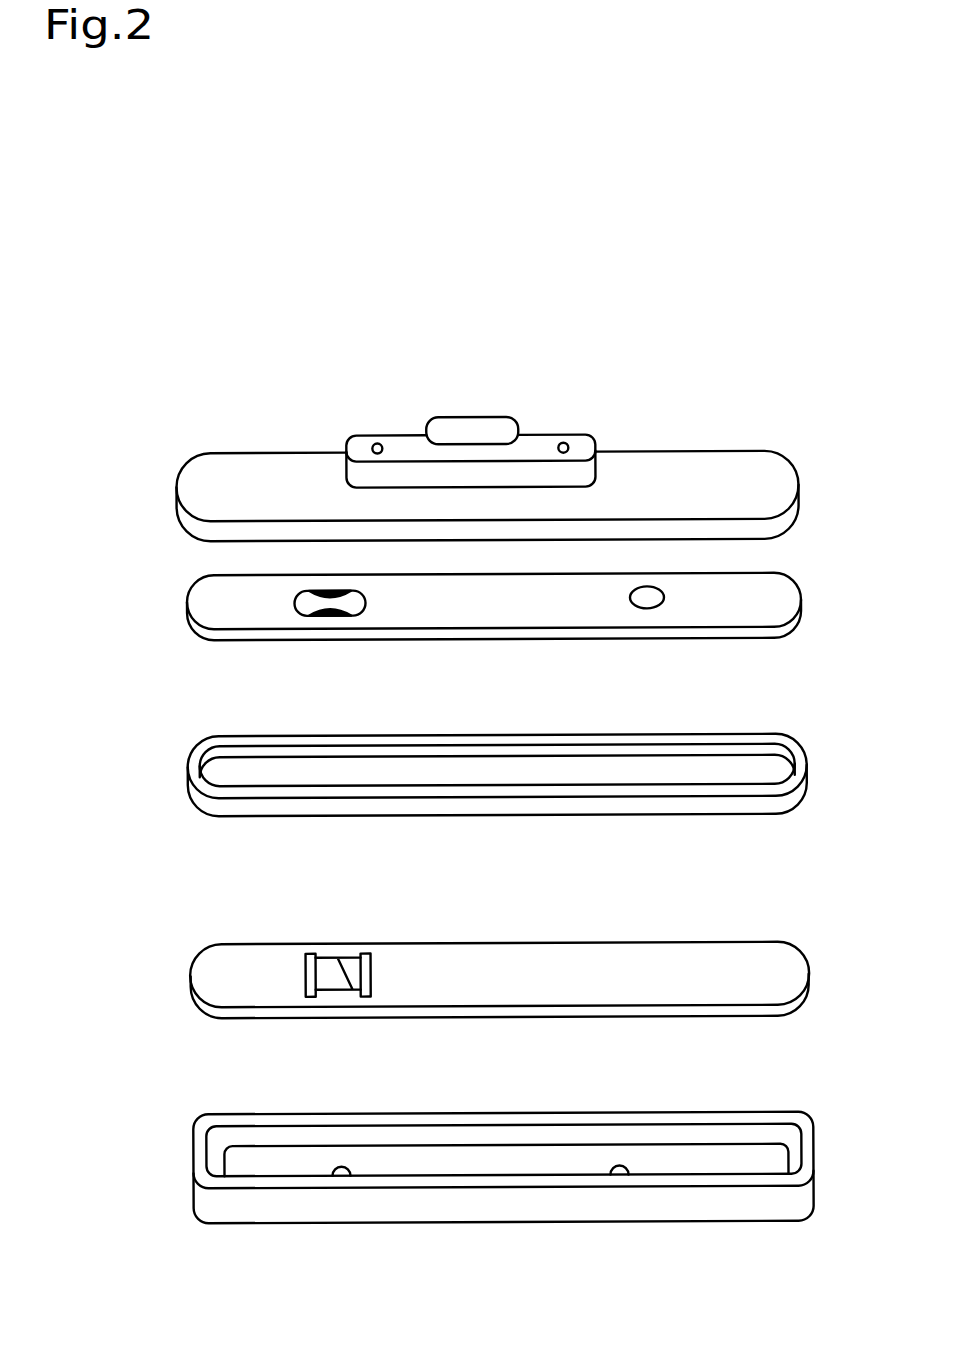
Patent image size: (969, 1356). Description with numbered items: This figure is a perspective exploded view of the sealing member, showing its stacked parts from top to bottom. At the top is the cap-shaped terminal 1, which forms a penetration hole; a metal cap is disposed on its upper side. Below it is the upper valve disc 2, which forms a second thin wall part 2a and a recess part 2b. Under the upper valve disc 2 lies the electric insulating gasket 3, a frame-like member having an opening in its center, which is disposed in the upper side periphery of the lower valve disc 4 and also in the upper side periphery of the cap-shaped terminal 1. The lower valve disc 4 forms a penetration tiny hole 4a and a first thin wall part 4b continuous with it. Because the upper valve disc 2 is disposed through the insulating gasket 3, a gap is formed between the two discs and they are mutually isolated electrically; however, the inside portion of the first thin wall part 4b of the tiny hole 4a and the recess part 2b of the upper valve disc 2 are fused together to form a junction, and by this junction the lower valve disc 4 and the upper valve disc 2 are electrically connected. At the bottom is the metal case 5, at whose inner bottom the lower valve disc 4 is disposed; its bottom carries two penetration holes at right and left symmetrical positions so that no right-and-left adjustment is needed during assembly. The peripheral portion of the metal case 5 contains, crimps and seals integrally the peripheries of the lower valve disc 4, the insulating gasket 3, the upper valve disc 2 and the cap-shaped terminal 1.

The cap-shaped terminal 1 is at (788, 487).
The upper valve disc 2 is at (783, 598).
The second thin wall part 2a is at (653, 609).
The recess part 2b is at (352, 608).
The insulating gasket 3 is at (800, 762).
The lower valve disc 4 is at (795, 972).
The tiny hole 4a is at (365, 952).
The first thin wall part 4b is at (357, 993).
The metal case 5 is at (812, 1148).